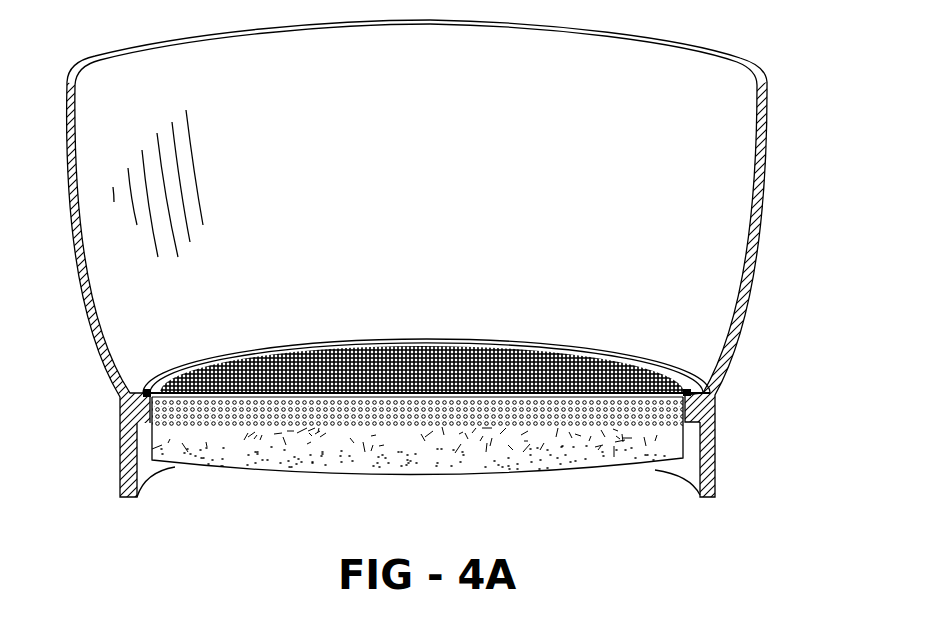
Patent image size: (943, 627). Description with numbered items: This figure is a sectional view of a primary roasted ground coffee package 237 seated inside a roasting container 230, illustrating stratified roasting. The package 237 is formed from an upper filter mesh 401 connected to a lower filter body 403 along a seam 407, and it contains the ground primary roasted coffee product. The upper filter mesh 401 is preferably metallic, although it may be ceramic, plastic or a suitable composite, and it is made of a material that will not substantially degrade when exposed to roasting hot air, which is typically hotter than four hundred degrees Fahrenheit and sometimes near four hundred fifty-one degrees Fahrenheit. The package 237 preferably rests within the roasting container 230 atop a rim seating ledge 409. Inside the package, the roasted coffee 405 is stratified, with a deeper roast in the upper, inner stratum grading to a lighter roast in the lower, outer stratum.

The roasting container 230 is at (763, 203).
The primary roasted ground coffee package 237 is at (424, 329).
The upper filter mesh 401 is at (547, 394).
The lower filter body 403 is at (300, 477).
The roasted coffee 405 is at (418, 447).
The seam 407 is at (150, 390).
The rim seating ledge 409 is at (120, 425).